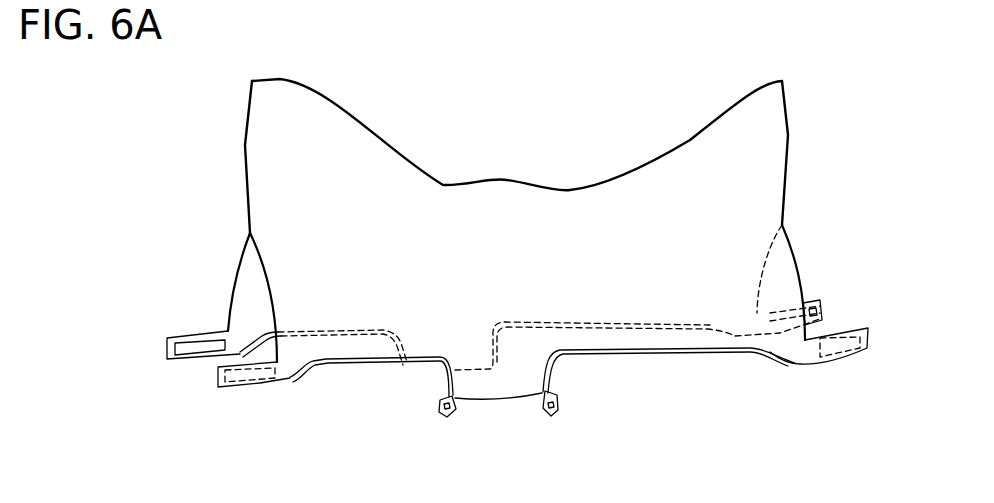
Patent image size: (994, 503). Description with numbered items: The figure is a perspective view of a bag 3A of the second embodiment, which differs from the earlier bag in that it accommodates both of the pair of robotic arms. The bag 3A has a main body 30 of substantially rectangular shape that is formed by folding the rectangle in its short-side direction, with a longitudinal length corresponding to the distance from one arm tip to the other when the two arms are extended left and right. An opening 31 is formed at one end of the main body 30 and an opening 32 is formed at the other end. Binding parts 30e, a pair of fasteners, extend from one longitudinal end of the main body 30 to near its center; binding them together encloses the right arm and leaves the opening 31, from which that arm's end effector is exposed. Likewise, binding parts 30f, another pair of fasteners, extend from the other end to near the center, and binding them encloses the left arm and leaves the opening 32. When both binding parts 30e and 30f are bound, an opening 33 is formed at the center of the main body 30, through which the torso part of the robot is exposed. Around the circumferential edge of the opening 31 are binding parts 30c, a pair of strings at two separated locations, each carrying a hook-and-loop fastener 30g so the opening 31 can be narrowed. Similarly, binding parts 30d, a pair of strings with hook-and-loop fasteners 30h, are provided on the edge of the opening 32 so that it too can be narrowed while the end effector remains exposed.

The main body 30 is at (433, 182).
The bag 3A is at (552, 176).
The opening 31 is at (247, 290).
The opening 32 is at (788, 283).
The binding parts 30c is at (177, 360).
The binding parts 30d is at (815, 298).
The binding parts 30e is at (322, 338).
The binding parts 30f is at (593, 330).
The hook-and-loop fastener 30g is at (200, 355).
The hook-and-loop fastener 30h is at (823, 303).
The opening 33 is at (496, 392).